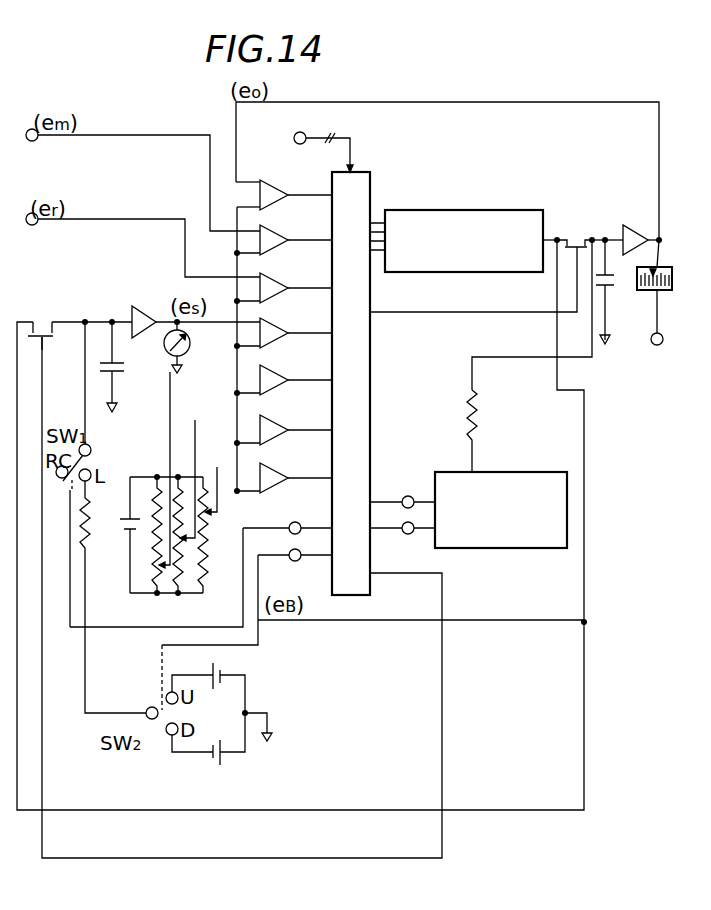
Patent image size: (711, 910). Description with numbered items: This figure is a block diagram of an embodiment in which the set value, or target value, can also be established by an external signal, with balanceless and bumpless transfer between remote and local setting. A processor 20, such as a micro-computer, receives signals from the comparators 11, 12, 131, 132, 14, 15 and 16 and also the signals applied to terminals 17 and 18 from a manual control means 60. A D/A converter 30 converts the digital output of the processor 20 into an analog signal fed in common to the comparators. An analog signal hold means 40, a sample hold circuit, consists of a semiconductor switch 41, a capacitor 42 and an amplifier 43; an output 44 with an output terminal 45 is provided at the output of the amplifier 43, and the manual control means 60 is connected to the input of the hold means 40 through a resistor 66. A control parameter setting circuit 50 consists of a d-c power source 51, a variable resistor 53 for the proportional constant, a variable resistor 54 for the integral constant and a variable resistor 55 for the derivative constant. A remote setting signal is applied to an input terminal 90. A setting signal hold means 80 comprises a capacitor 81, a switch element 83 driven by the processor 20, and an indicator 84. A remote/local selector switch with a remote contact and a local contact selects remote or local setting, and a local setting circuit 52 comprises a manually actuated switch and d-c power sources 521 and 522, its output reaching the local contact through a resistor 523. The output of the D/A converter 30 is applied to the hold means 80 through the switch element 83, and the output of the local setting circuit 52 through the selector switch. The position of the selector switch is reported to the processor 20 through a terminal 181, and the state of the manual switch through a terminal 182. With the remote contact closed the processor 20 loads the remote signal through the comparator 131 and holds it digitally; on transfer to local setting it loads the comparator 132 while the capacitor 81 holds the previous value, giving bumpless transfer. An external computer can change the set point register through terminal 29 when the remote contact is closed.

The comparator 11 is at (296, 177).
The comparator 12 is at (296, 222).
The comparator 131 is at (296, 270).
The comparator 132 is at (296, 315).
The comparator 14 is at (296, 362).
The comparator 15 is at (296, 412).
The comparator 16 is at (296, 460).
The terminal 17 is at (402, 492).
The terminal 18 is at (402, 544).
The terminal 181 is at (201, 564).
The terminal 182 is at (247, 597).
The processor 20 is at (362, 172).
The terminal 29 is at (304, 150).
The D/A converter 30 is at (444, 210).
The analog signal hold means 40 is at (516, 391).
The semiconductor switch 41 is at (481, 262).
The capacitor 42 is at (617, 290).
The amplifier 43 is at (631, 224).
The output 44 is at (643, 302).
The output terminal 45 is at (652, 346).
The control parameter setting circuit 50 is at (165, 500).
The d-c power source 51 is at (138, 528).
The local setting circuit 52 is at (249, 721).
The d-c power source 521 is at (218, 681).
The d-c power source 522 is at (212, 752).
The resistor 523 is at (95, 518).
The variable resistor 53 is at (150, 577).
The variable resistor 54 is at (172, 577).
The variable resistor 55 is at (210, 577).
The manual control means 60 is at (497, 550).
The resistor 66 is at (482, 416).
The setting signal hold means 80 is at (158, 302).
The capacitor 81 is at (126, 367).
The switch element 83 is at (80, 321).
The indicator 84 is at (191, 347).
The input terminal 90 is at (143, 237).